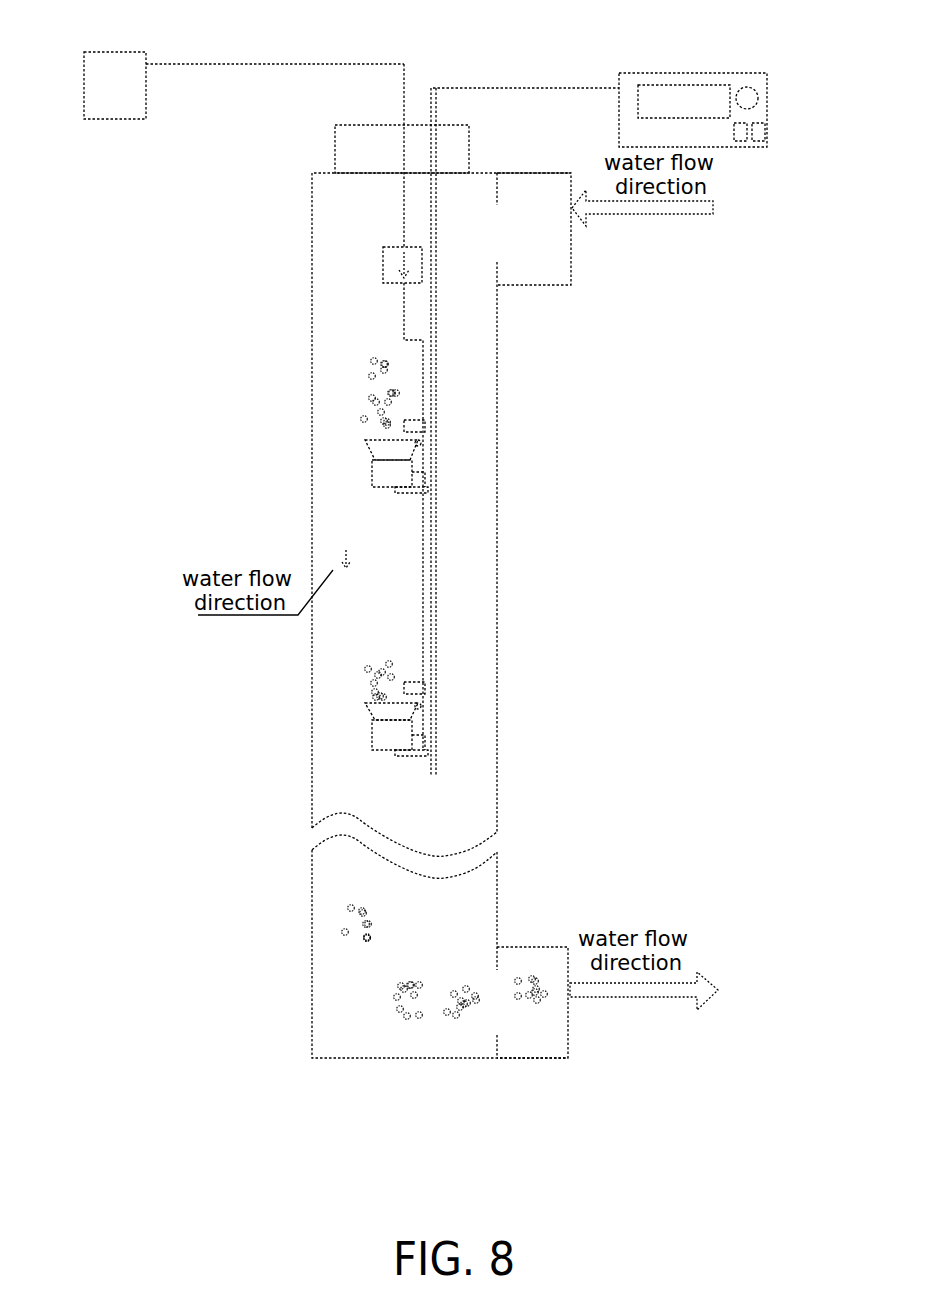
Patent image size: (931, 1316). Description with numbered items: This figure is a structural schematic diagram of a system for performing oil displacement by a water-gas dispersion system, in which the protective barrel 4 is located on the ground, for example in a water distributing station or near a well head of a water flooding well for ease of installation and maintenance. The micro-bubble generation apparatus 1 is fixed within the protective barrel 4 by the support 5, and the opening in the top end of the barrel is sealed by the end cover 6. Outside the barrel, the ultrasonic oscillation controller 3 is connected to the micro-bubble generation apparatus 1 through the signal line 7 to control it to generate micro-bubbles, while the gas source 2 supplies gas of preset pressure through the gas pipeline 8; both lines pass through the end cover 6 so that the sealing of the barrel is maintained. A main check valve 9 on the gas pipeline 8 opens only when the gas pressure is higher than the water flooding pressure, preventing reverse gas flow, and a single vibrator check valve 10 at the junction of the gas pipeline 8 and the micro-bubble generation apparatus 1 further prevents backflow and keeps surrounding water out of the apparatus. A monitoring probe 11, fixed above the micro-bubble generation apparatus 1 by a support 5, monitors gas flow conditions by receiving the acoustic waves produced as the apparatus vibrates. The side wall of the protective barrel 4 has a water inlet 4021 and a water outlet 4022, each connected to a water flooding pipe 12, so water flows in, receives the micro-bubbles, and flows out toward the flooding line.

The micro-bubble generation apparatus 1 is at (415, 722).
The gas source 2 is at (103, 108).
The ultrasonic oscillation controller 3 is at (638, 73).
The protective barrel 4 is at (298, 997).
The support 5 is at (437, 747).
The end cover 6 is at (413, 125).
The signal line 7 is at (437, 330).
The gas pipeline 8 is at (437, 373).
The main check valve 9 is at (418, 283).
The single vibrator check valve 10 is at (418, 706).
The monitoring probe 11 is at (418, 685).
The water flooding pipe 12 is at (578, 276).
The water inlet 4021 is at (500, 215).
The water outlet 4022 is at (500, 1013).